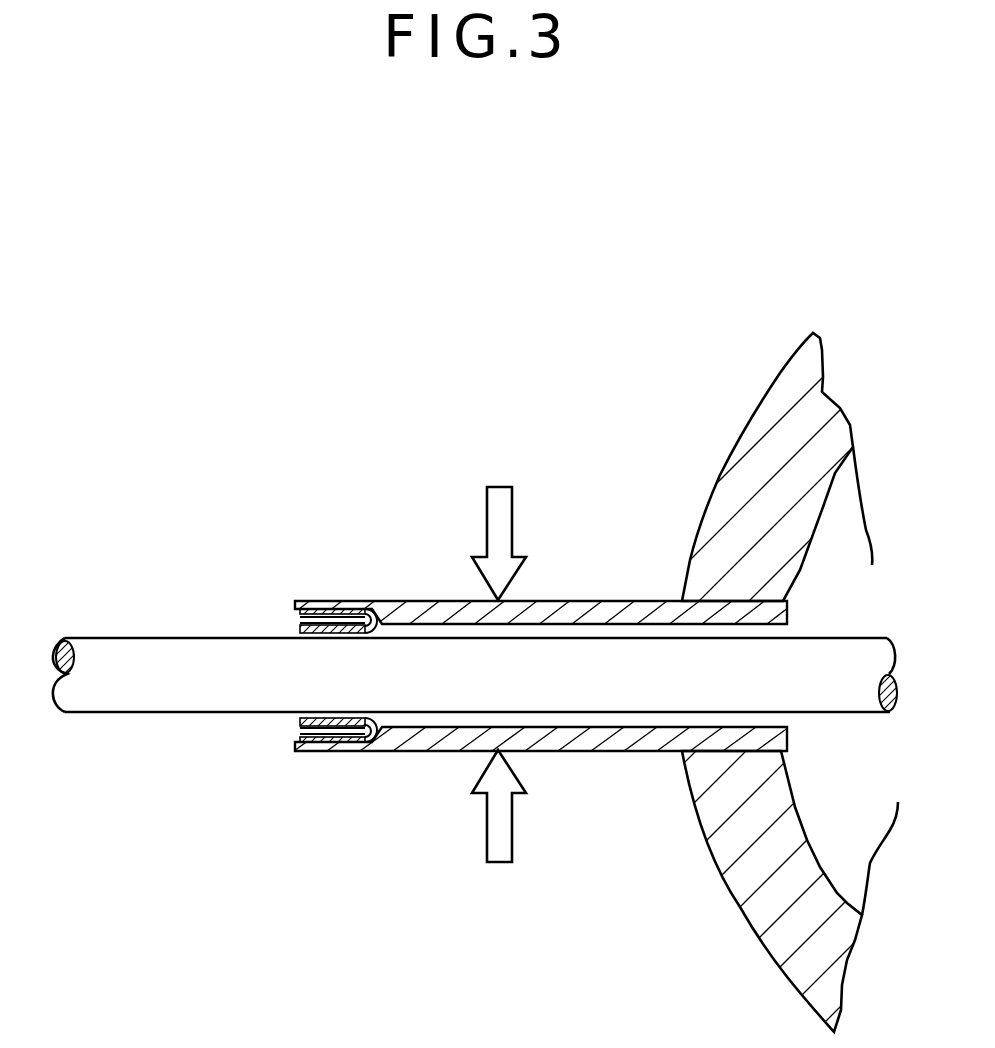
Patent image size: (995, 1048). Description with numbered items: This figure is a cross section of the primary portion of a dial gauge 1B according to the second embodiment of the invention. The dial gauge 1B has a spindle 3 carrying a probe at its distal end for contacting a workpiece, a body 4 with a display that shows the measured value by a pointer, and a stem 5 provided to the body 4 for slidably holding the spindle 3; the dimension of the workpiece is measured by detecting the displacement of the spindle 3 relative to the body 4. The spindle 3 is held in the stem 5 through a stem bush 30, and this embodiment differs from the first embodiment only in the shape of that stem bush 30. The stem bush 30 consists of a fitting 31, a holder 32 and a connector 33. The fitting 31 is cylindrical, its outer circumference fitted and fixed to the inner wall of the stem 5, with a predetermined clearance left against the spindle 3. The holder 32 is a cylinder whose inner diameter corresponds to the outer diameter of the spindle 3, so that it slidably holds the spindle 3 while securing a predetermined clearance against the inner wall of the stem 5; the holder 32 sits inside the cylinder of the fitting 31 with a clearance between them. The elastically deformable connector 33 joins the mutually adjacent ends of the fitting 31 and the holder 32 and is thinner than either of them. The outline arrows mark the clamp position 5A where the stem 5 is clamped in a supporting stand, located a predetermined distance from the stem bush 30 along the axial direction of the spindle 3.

The dial gauge 1B is at (419, 499).
The spindle 3 is at (143, 698).
The body 4 is at (722, 485).
The stem 5 is at (653, 600).
The clamp position 5A is at (514, 521).
The stem bush 30 is at (306, 683).
The fitting 31 is at (305, 746).
The holder 32 is at (297, 727).
The connector 33 is at (376, 746).